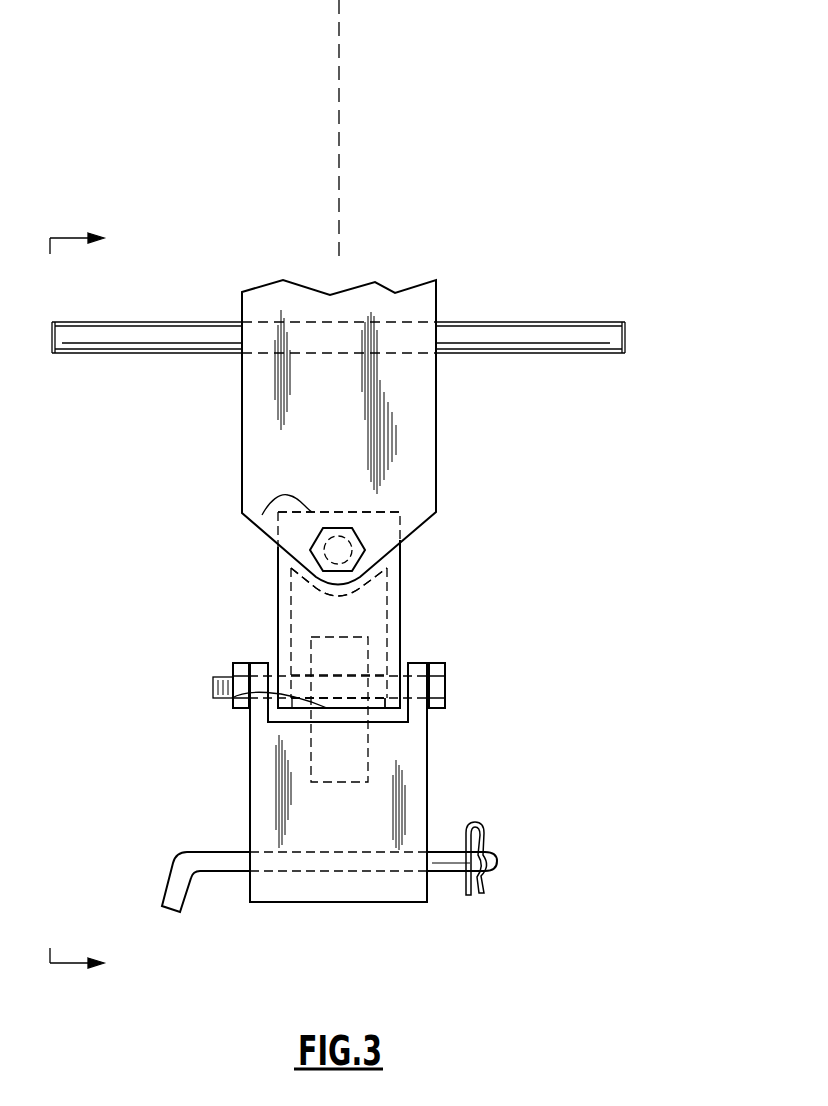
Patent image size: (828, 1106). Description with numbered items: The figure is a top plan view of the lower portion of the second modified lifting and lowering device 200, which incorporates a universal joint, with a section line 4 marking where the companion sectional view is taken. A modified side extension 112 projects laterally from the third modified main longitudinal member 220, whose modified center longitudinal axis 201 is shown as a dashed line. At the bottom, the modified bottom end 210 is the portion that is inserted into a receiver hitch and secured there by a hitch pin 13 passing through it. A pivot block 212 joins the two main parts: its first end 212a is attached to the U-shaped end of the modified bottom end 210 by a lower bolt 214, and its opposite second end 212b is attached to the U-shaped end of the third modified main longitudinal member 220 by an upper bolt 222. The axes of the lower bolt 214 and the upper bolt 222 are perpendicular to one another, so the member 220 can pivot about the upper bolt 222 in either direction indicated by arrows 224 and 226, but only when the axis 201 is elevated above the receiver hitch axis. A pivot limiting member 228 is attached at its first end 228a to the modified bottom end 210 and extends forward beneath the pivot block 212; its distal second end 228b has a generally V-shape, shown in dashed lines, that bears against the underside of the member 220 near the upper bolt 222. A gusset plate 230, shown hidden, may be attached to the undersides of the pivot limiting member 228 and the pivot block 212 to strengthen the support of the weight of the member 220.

The section line 4- 4 is at (84, 602).
The hitch pin 13 is at (497, 862).
The modified side extension 112 is at (625, 333).
The second modified lifting and lowering device 200 is at (592, 180).
The modified center longitudinal axis 201 is at (339, 48).
The modified bottom end 210 is at (427, 772).
The pivot block 212 is at (400, 630).
The first end of pivot block 212a is at (232, 698).
The second end of pivot block 212b is at (262, 515).
The lower bolt 214 is at (445, 687).
The third modified main longitudinal member 220 is at (412, 459).
The upper bolt 222 is at (362, 540).
The arrow 224 is at (225, 443).
The arrow 226 is at (452, 396).
The pivot limiting member 228 is at (300, 620).
The first end of pivot limiting member 228a is at (380, 722).
The second end of pivot limiting member 228b is at (390, 585).
The gusset plate 230 is at (318, 762).